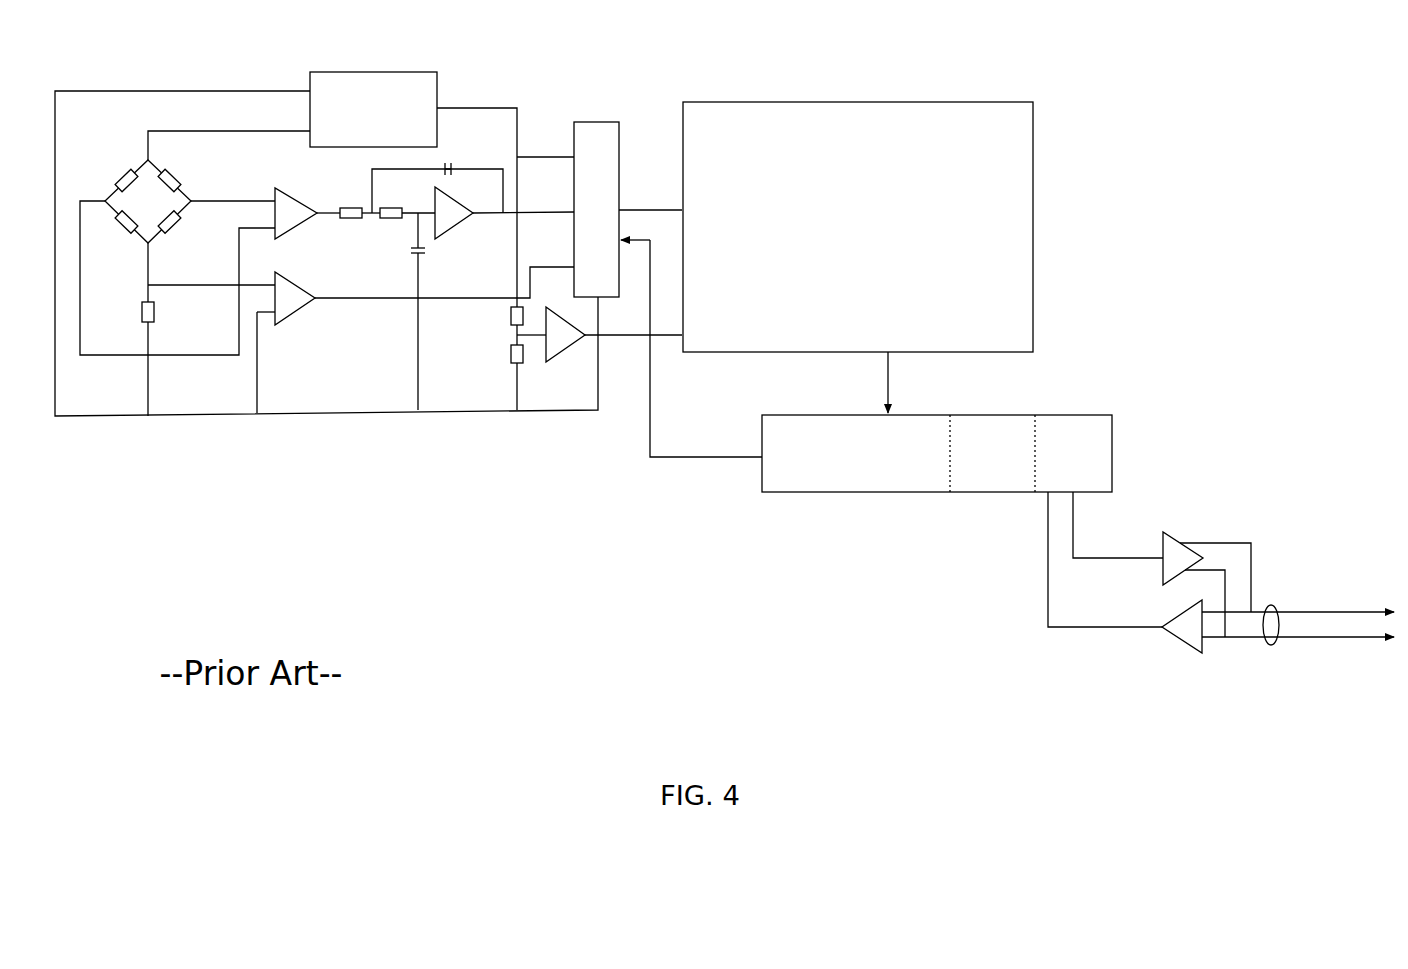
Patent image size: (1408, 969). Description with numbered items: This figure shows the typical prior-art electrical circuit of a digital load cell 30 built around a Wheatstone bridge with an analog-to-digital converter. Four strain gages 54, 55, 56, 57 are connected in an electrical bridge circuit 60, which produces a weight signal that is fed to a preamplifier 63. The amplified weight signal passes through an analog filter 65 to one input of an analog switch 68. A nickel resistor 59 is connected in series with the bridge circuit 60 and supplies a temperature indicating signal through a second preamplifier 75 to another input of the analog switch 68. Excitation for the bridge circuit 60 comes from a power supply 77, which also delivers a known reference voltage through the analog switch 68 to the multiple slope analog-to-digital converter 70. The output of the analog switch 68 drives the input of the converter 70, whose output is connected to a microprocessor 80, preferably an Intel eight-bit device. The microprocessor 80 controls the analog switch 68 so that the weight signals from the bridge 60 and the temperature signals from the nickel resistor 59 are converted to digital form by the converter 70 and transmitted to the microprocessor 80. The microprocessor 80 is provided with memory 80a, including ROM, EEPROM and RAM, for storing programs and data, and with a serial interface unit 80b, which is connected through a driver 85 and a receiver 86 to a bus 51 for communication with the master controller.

The load cell circuit 30 is at (326, 220).
The bus 51 is at (1298, 656).
The strain gage 54 is at (106, 173).
The strain gage 55 is at (185, 171).
The strain gage 56 is at (185, 232).
The strain gage 57 is at (111, 232).
The nickel resistor 59 is at (177, 312).
The electrical bridge circuit 60 is at (132, 178).
The preamplifier 63 is at (277, 196).
The analog filter 65 is at (447, 286).
The analog switch 68 is at (627, 157).
The multiple slope analog-to-digital converter 70 is at (858, 183).
The preamplifier 75 is at (309, 289).
The power supply 77 is at (411, 83).
The microprocessor 80 is at (927, 489).
The memory 80a is at (1088, 434).
The serial interface unit 80b is at (1143, 453).
The driver 85 is at (1214, 564).
The receiver 86 is at (1147, 656).